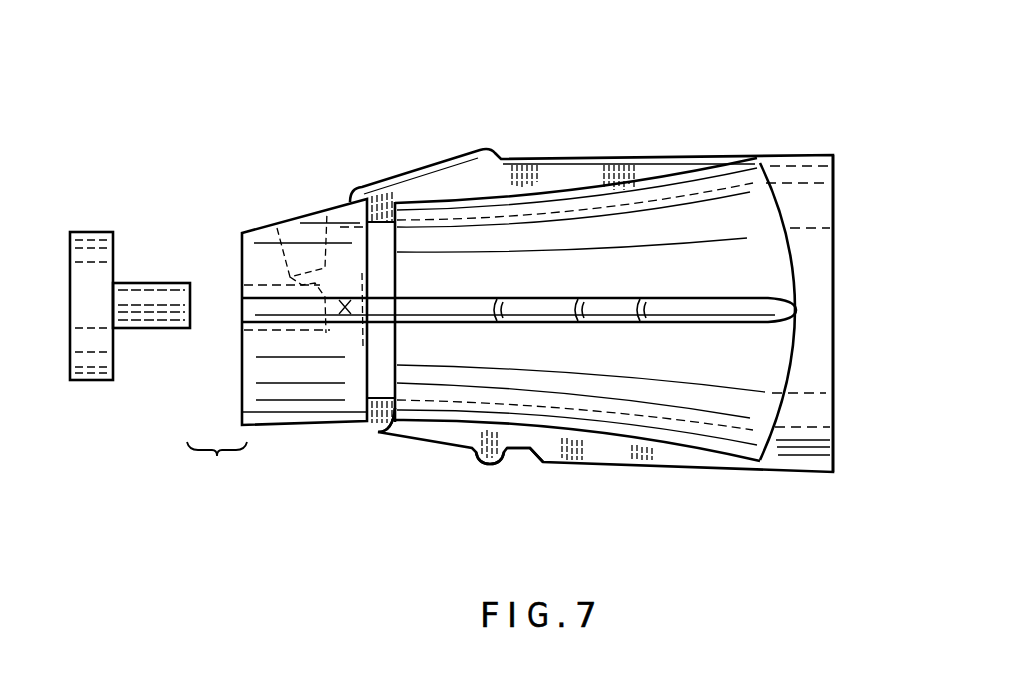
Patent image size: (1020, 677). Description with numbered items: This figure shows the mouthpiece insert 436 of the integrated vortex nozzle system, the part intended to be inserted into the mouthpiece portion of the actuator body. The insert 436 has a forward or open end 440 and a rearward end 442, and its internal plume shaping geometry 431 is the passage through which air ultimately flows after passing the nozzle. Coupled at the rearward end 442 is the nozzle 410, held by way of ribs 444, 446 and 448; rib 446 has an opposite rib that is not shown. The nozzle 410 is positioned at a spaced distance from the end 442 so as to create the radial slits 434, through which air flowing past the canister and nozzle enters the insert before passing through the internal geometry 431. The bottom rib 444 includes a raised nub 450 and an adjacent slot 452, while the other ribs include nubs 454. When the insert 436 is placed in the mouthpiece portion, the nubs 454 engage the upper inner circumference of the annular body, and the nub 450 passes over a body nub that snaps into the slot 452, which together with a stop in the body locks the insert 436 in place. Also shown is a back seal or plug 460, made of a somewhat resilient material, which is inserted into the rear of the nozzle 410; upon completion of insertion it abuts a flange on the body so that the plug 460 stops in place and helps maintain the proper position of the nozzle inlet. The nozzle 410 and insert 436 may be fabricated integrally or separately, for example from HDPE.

The nozzle 410 is at (260, 234).
The internal plume shaping geometry 431 is at (835, 376).
The radial slits 434 is at (384, 226).
The mouthpiece insert 436 is at (653, 124).
The forward or open end 440 is at (836, 188).
The rearward end 442 is at (380, 424).
The rib 444 is at (603, 452).
The rib 446 is at (672, 308).
The rib 448 is at (565, 181).
The raised nub 450 is at (485, 462).
The slot 452 is at (518, 458).
The nubs 454 is at (494, 149).
The back seal or plug 460 is at (97, 382).